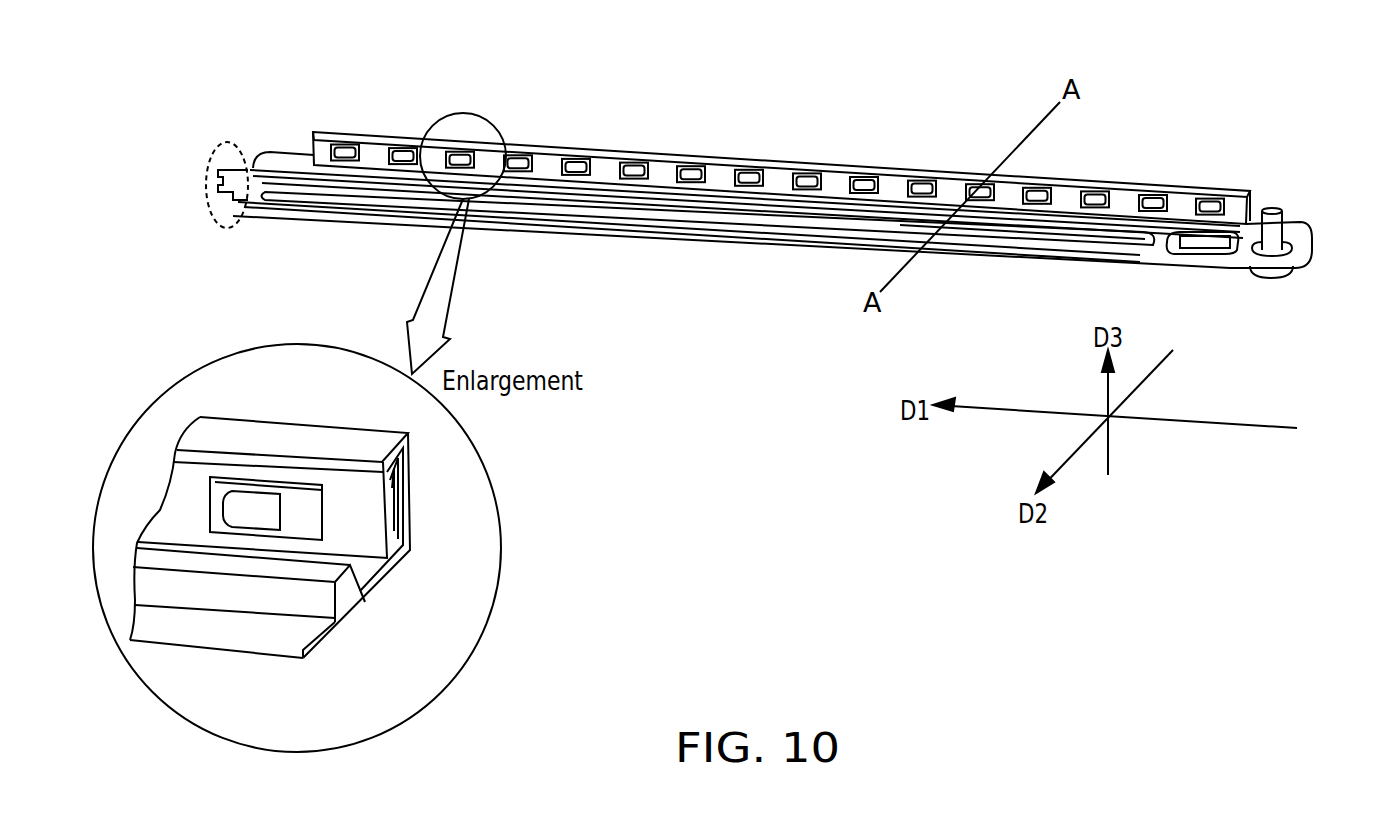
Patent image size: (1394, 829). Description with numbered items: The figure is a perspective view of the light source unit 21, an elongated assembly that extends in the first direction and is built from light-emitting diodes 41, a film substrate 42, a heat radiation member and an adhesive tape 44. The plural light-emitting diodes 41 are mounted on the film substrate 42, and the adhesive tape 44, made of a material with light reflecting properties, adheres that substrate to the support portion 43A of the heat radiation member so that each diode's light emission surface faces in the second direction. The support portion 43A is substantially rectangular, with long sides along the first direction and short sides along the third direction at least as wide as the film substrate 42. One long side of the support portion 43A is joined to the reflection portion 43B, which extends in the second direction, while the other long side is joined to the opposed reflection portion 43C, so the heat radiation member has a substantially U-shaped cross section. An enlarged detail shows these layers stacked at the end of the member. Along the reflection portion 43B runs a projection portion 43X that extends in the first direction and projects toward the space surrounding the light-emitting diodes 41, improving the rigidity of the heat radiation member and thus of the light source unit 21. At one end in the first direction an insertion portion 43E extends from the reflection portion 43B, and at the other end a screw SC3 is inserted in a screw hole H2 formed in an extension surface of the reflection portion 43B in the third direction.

The light source unit 21 is at (677, 345).
The light-emitting diode 41 is at (633, 160).
The film substrate 42 is at (720, 165).
The support portion 43A is at (402, 479).
The reflection portion 43B is at (555, 228).
The reflection portion 43C is at (338, 441).
The insertion portion 43E is at (236, 142).
The projection portion 43X is at (795, 217).
The adhesive tape 44 is at (392, 491).
The screw hole H2 is at (1312, 246).
The screw SC3 is at (1275, 282).